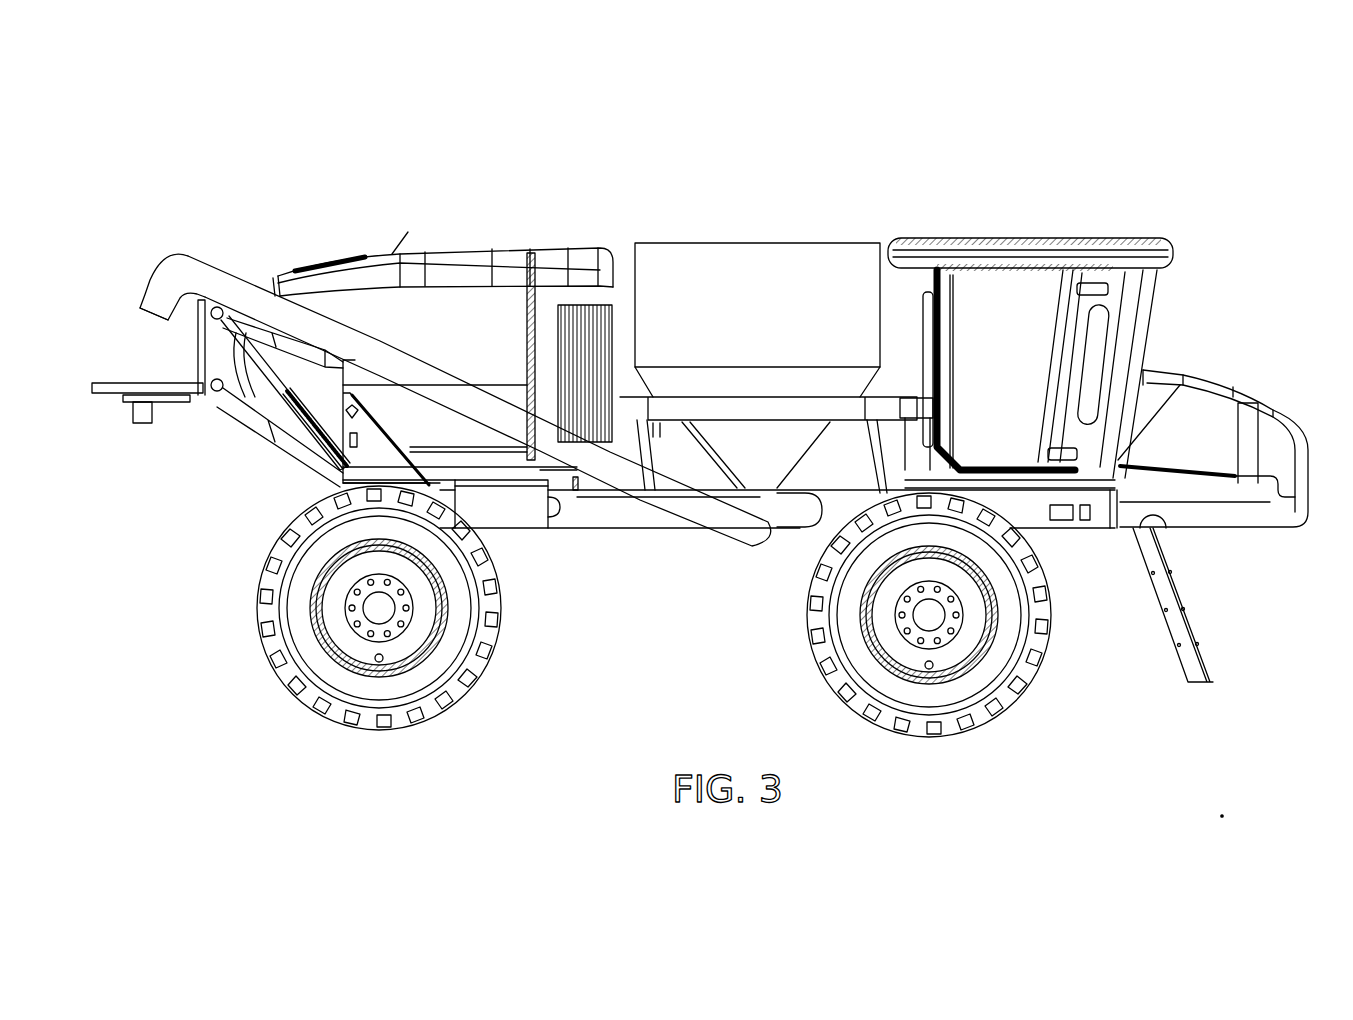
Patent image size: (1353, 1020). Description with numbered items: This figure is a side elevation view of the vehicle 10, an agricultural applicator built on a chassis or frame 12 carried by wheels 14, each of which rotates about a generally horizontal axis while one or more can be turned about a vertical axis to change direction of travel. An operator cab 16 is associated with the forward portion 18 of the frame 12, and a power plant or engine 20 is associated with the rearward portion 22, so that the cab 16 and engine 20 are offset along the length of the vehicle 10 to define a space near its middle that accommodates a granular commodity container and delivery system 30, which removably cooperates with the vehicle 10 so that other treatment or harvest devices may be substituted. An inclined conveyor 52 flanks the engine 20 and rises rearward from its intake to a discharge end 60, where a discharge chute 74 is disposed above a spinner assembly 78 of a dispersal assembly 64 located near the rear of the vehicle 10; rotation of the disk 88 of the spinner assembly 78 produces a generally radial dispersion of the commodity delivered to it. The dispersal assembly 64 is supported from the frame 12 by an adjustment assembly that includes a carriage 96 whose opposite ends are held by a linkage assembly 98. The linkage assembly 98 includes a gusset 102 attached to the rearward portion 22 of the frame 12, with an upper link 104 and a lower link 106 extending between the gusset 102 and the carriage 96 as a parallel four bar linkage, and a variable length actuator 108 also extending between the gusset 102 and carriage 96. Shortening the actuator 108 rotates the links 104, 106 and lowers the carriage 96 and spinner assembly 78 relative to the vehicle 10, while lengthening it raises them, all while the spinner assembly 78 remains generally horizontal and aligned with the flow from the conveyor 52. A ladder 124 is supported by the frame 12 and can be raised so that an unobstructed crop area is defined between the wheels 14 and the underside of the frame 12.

The vehicle 10 is at (200, 124).
The frame 12 is at (645, 520).
The wheels 14 is at (470, 661).
The cab 16 is at (1079, 240).
The forward portion 18 is at (1108, 530).
The engine 20 is at (463, 256).
The rearward portion 22 is at (562, 515).
The delivery system 30 is at (742, 316).
The conveyor 52 is at (395, 347).
The discharge end 60 is at (172, 262).
The dispersal assembly 64 is at (213, 195).
The discharge chute 74 is at (150, 316).
The spinner assembly 78 is at (135, 410).
The disk 88 is at (750, 540).
The carriage 96 is at (182, 293).
The linkage assembly 98 is at (285, 246).
The gusset 102 is at (390, 437).
The upper link 104 is at (240, 312).
The lower link 106 is at (254, 423).
The actuator 108 is at (307, 427).
The ladder 124 is at (1185, 627).